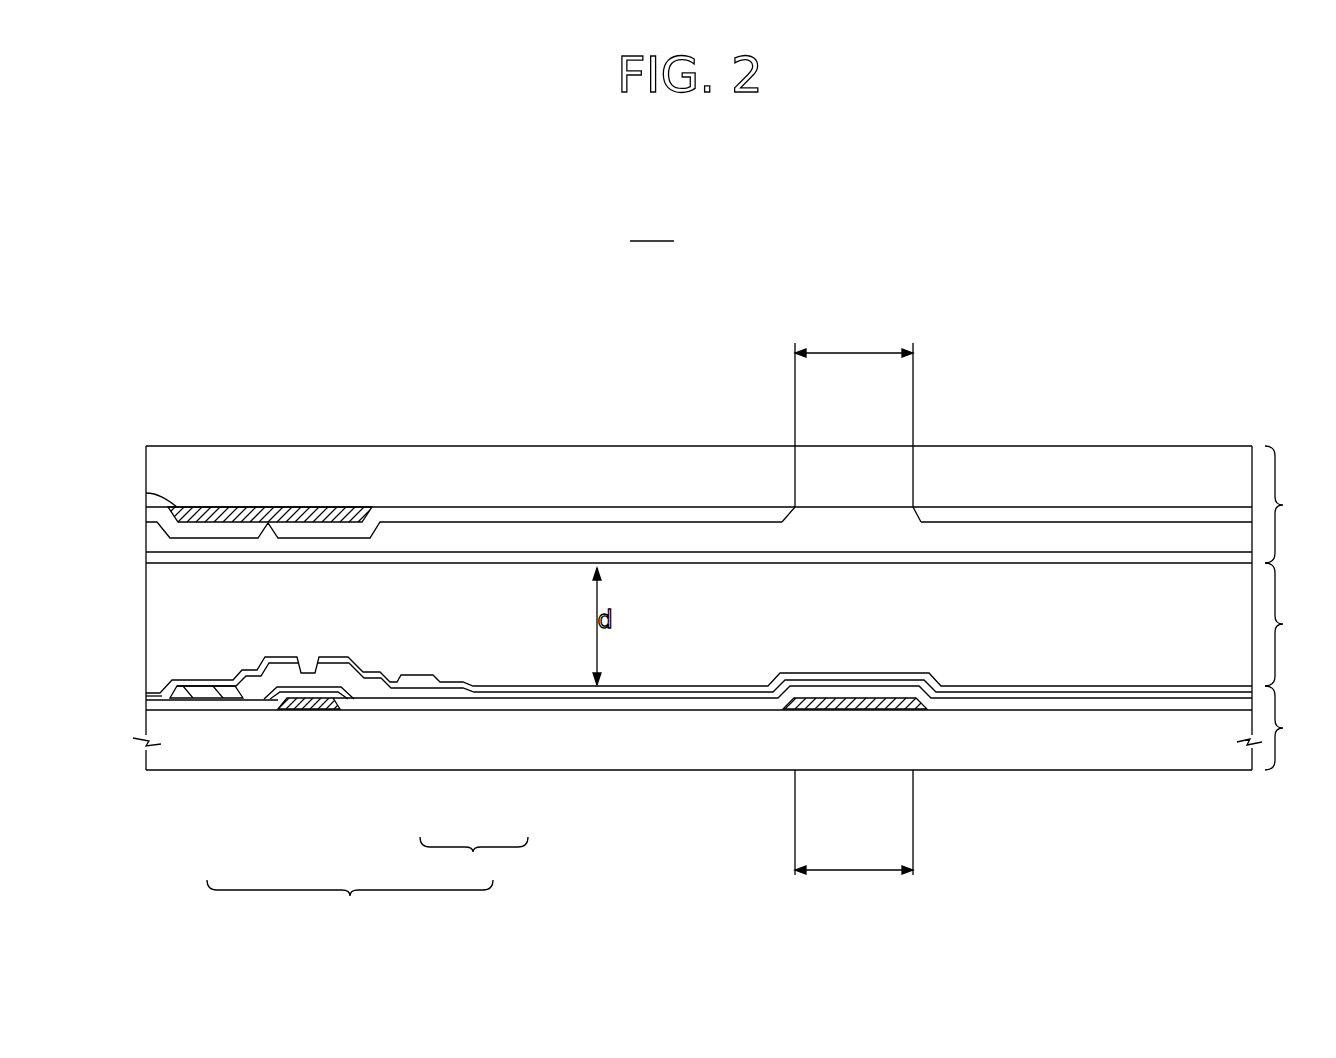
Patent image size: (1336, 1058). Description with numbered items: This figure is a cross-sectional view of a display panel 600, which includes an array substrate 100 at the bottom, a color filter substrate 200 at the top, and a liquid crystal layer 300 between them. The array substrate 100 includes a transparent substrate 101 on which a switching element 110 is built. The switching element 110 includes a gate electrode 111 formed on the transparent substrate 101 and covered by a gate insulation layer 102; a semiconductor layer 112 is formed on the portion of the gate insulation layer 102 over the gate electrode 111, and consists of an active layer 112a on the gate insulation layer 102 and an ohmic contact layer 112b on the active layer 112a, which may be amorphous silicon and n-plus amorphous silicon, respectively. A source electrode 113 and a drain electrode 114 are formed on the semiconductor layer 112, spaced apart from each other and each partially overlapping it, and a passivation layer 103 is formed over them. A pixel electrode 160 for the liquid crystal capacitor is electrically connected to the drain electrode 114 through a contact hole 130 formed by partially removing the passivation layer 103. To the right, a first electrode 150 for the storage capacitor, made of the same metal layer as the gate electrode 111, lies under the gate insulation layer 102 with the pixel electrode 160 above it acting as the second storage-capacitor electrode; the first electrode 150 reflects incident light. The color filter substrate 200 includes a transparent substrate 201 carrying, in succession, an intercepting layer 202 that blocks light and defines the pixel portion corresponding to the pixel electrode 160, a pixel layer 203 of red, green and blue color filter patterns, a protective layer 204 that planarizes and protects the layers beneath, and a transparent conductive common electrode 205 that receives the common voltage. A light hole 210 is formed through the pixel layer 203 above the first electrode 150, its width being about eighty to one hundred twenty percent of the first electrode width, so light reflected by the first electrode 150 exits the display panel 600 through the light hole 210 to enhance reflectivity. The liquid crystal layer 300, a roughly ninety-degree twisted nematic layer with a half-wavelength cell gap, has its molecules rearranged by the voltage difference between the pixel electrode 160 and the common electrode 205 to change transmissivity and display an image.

The display panel 600 is at (652, 229).
The array substrate 100 is at (733, 728).
The transparent substrate 101 is at (153, 757).
The gate insulation layer 102 is at (147, 705).
The passivation layer 103 is at (152, 695).
The switching element 110 is at (350, 901).
The gate electrode 111 is at (300, 703).
The semiconductor layer 112 is at (474, 859).
The active layer 112a is at (363, 690).
The ohmic contact layer 112b is at (373, 690).
The source electrode 113 is at (218, 690).
The drain electrode 114 is at (337, 663).
The contact hole 130 is at (428, 675).
The first electrode for the storage capacitor 150 is at (843, 703).
The pixel electrode 160 is at (617, 692).
The color filter substrate 200 is at (740, 504).
The transparent substrate 201 is at (152, 465).
The intercepting layer 202 is at (146, 492).
The pixel layer 203 is at (155, 513).
The protective layer 204 is at (153, 542).
The common electrode 205 is at (150, 559).
The light hole 210 is at (858, 516).
The liquid crystal layer 300 is at (740, 624).